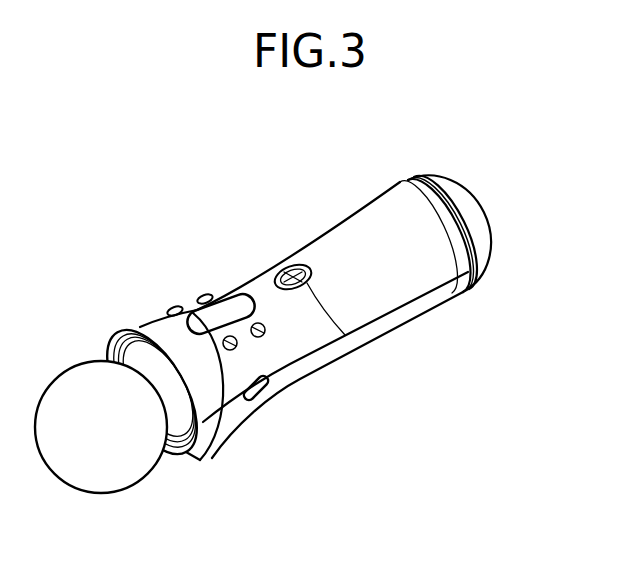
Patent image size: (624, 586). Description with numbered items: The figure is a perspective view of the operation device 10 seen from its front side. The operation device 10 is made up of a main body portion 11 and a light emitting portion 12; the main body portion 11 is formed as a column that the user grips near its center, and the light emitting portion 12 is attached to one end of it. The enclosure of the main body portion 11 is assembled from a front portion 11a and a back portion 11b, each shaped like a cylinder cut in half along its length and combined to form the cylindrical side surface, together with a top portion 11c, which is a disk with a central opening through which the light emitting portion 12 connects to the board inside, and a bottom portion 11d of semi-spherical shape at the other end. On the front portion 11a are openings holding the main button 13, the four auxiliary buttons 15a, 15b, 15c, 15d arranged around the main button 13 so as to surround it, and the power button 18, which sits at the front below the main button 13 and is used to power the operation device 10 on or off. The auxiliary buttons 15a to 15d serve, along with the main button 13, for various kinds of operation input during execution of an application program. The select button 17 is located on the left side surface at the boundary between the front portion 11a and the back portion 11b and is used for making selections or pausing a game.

The operation device 10 is at (368, 412).
The main body portion 11 is at (442, 322).
The front portion 11a is at (351, 237).
The back portion 11b is at (381, 323).
The top portion 11c is at (168, 452).
The bottom portion 11d is at (482, 248).
The light emitting portion 12 is at (103, 483).
The main button 13 is at (202, 317).
The auxiliary button 15a is at (170, 309).
The auxiliary button 15b is at (229, 351).
The auxiliary button 15c is at (205, 295).
The auxiliary button 15d is at (266, 337).
The select button 17 is at (246, 402).
The power button 18 is at (293, 270).